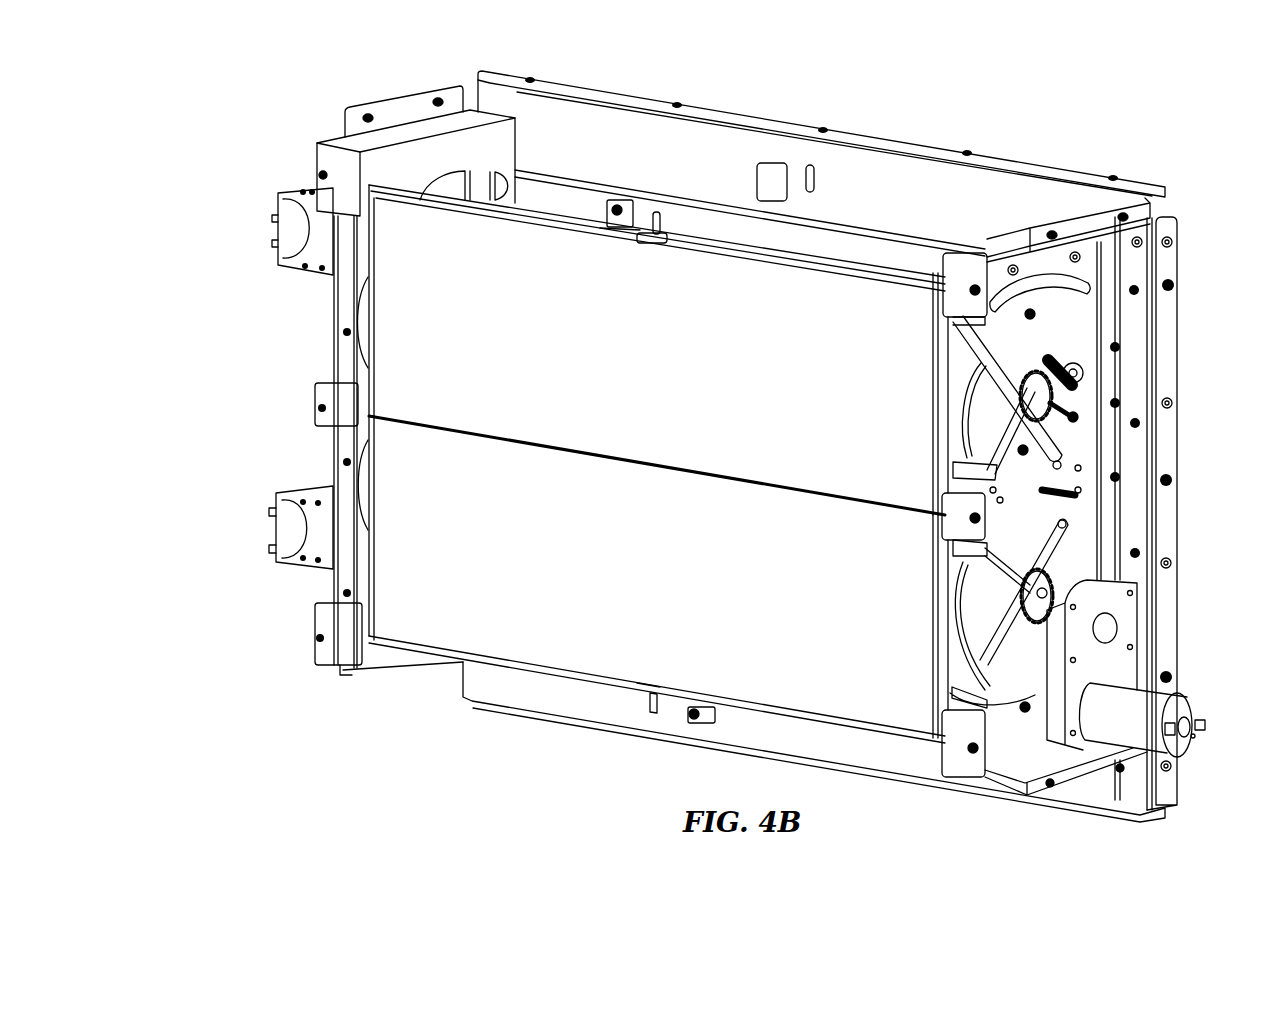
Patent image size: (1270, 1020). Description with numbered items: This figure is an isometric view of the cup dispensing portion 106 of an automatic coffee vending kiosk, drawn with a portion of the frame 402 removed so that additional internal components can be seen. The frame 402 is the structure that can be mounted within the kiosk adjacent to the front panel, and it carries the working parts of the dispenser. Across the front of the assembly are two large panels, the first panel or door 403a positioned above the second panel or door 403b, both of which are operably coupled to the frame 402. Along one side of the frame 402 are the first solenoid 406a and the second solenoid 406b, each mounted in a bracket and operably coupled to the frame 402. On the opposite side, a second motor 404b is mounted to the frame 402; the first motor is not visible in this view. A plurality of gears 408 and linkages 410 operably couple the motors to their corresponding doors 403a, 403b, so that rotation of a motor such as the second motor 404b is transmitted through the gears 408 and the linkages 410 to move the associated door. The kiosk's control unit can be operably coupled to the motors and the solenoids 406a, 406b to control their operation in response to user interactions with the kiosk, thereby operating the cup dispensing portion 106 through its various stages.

The cup dispensing portion 106 is at (288, 128).
The frame 402 is at (1160, 327).
The first panel or door 403a is at (684, 437).
The second panel or door 403b is at (684, 547).
The second motor 404b is at (1188, 703).
The first solenoid 406a is at (276, 233).
The second solenoid 406b is at (274, 532).
The gears 408 is at (1030, 383).
The linkages 410 is at (1010, 447).